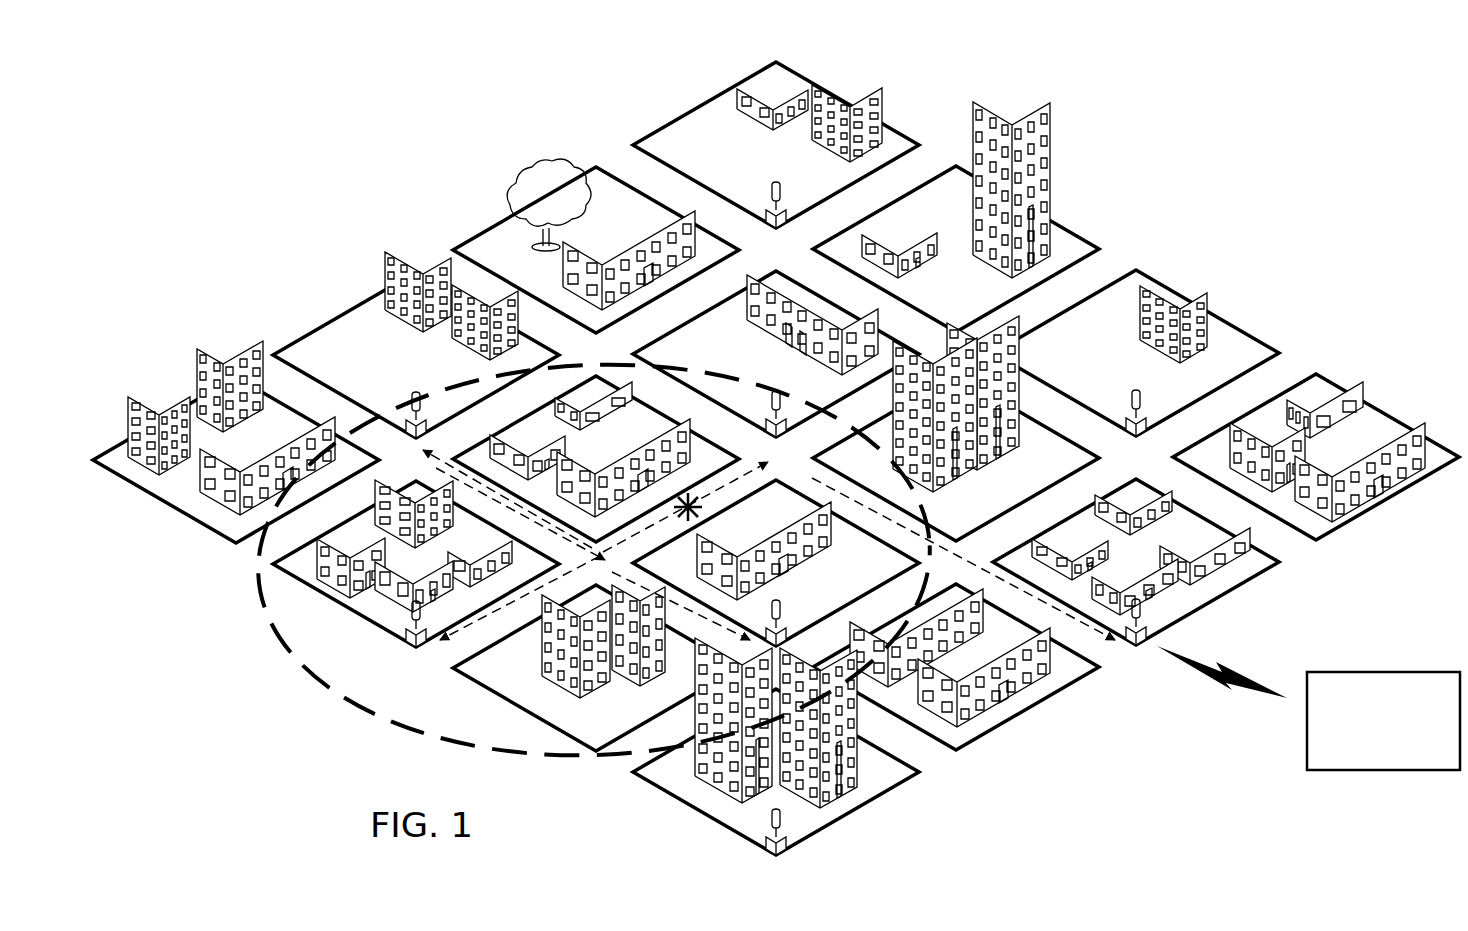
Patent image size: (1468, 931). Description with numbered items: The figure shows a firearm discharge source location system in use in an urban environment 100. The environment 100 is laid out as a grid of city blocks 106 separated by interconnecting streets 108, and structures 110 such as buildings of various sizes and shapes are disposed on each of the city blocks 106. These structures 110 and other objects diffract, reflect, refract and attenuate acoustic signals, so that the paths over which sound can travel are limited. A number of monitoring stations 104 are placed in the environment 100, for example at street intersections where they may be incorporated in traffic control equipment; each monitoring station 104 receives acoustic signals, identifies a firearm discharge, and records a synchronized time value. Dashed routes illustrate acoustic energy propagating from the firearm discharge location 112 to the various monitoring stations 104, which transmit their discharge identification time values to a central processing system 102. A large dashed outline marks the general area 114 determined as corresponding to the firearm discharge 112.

The urban environment 100 is at (412, 125).
The central processing system 102 is at (1383, 770).
The monitoring station 104 is at (765, 202).
The city block 106 is at (705, 99).
The street 108 is at (612, 152).
The structure 110 is at (853, 77).
The firearm discharge location 112 is at (689, 504).
The general area 114 is at (312, 668).